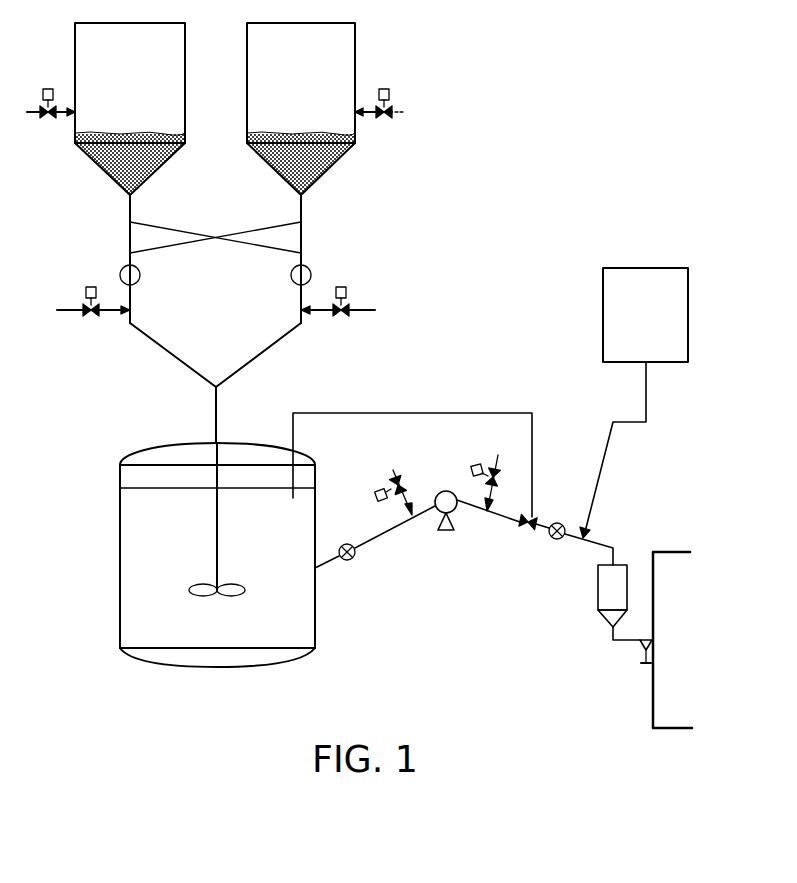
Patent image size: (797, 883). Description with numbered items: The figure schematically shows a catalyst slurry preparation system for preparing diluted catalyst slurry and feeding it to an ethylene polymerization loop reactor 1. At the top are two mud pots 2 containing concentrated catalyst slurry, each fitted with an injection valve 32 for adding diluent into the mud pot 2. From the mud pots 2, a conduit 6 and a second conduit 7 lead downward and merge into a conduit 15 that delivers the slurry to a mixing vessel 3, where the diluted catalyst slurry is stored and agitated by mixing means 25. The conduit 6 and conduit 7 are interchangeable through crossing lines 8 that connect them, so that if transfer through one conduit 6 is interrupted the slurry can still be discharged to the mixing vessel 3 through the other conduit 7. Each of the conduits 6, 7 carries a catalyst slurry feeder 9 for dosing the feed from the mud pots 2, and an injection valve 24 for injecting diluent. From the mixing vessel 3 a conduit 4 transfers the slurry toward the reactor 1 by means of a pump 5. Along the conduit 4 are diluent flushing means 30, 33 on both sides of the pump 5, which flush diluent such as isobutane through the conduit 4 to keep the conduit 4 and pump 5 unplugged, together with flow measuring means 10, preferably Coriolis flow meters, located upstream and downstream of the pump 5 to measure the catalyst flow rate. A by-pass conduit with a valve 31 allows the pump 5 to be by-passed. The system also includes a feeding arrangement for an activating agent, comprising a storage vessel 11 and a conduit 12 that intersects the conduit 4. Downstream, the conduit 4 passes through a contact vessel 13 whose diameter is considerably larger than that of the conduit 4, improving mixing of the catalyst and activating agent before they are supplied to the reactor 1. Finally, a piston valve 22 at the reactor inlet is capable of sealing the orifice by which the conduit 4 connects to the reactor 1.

The reactor 1 is at (684, 634).
The mud pot 2 is at (137, 78).
The mixing vessel 3 is at (178, 532).
The conduit 4 is at (325, 567).
The pump 5 is at (445, 533).
The conduit 6 is at (178, 362).
The conduit 7 is at (251, 363).
The lines 8 is at (179, 245).
The catalyst slurry feeder 9 is at (141, 277).
The flow measuring means 10 is at (341, 546).
The storage vessel 11 is at (660, 311).
The conduit 12 is at (600, 482).
The contact vessel 13 is at (603, 592).
The conduit 15 is at (219, 421).
The piston valve 22 is at (638, 651).
The injection valve 24 is at (70, 312).
The mixing means 25 is at (234, 596).
The diluent flushing means 30 is at (393, 470).
The valve 31 is at (532, 532).
The injection valve 32 is at (58, 118).
The diluent flushing means 33 is at (498, 455).